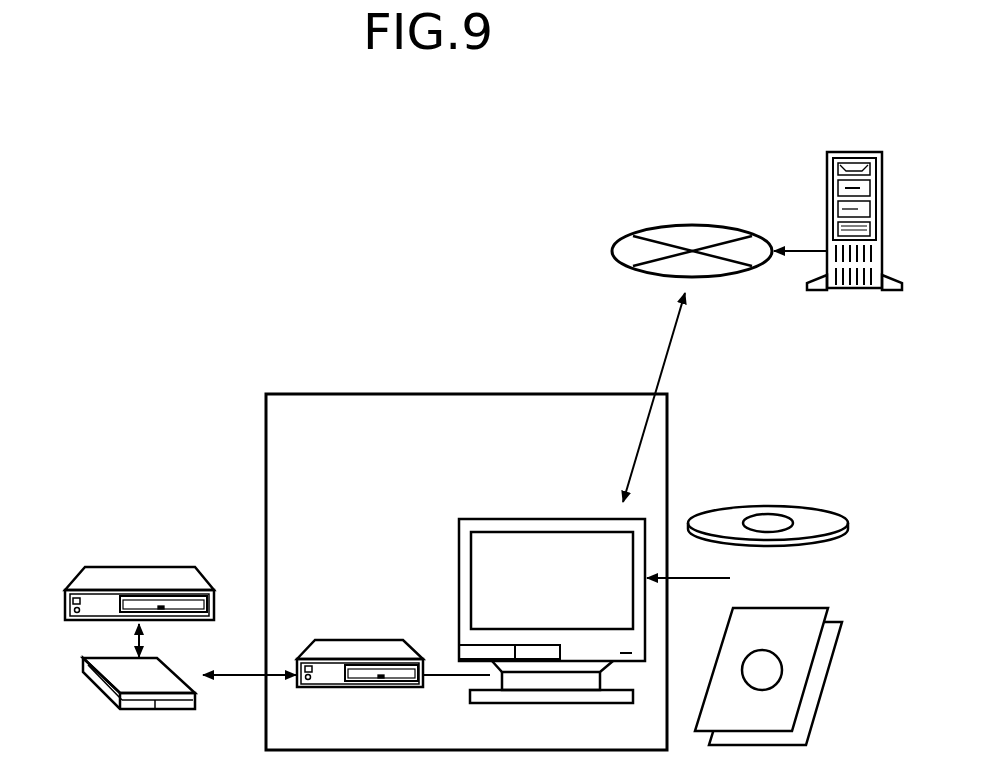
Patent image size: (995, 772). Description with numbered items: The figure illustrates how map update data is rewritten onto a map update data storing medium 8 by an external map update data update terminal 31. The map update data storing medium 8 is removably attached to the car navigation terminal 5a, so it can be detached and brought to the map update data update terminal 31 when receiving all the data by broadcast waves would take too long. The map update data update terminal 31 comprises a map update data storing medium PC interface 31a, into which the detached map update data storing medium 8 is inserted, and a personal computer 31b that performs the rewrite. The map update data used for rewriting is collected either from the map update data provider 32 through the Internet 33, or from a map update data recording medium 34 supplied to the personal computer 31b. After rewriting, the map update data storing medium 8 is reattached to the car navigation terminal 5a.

The car navigation terminal 5a is at (141, 567).
The map update data storing medium 8 is at (157, 711).
The map update data update terminal 31 is at (383, 393).
The map update data storing medium PC interface 31a is at (366, 640).
The personal computer 31b is at (548, 519).
The map update data provider 32 is at (861, 291).
The Internet 33 is at (718, 271).
The map update data recording medium 34 is at (841, 636).